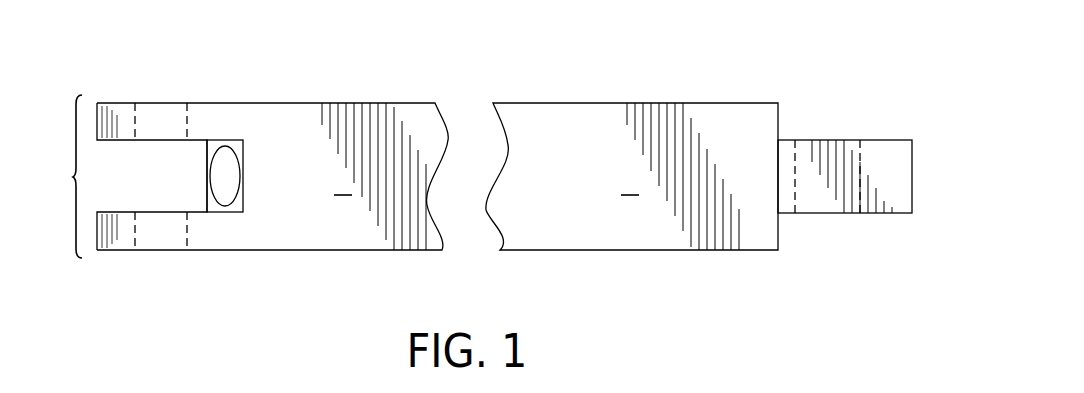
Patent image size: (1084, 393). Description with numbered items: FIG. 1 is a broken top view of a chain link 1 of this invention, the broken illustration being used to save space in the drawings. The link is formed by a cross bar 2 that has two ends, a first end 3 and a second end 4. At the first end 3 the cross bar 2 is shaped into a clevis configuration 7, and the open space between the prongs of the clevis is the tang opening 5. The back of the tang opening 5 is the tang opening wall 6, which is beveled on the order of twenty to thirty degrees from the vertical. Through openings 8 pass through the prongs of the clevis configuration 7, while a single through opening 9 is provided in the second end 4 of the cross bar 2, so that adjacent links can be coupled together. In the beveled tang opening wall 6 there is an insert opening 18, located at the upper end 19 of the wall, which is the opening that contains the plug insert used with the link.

The chain link 1 is at (480, 156).
The cross bar 2 is at (437, 176).
The first end 3 is at (178, 173).
The second end 4 is at (826, 130).
The tang opening 5 is at (151, 195).
The tang opening wall 6 is at (241, 138).
The clevis configuration 7 is at (178, 173).
The through openings 8 is at (165, 116).
The through opening 9 is at (820, 203).
The insert opening 18 is at (225, 200).
The upper end 19 is at (243, 152).